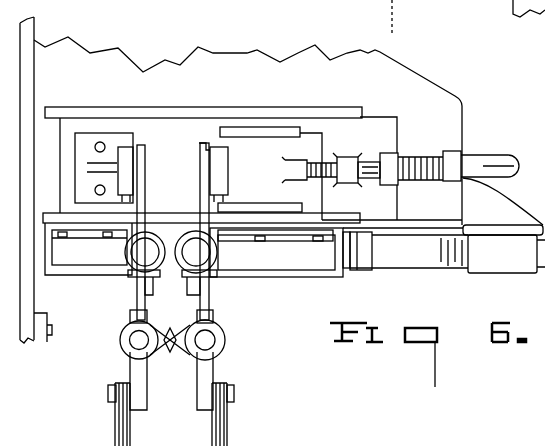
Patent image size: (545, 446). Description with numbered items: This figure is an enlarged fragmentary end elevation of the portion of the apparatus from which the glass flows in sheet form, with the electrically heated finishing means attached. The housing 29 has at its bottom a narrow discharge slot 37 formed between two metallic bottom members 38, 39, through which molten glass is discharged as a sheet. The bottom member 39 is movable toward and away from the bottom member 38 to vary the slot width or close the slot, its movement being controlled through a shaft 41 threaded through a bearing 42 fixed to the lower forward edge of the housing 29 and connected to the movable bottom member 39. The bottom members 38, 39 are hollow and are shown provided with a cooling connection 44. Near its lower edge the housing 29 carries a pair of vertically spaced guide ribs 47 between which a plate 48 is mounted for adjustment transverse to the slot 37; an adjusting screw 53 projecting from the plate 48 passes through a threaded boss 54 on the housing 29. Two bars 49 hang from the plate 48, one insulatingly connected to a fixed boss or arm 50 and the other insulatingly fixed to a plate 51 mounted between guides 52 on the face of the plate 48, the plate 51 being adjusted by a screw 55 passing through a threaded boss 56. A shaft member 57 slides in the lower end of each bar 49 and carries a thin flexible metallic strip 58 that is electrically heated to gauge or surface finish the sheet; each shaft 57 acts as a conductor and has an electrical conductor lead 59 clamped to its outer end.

The housing 29 is at (418, 93).
The discharge slot 37 is at (170, 267).
The bottom member 38 is at (90, 270).
The bottom member 39 is at (291, 272).
The shaft 41 is at (424, 260).
The bearing 42 is at (512, 263).
The cooling connection 44 is at (192, 260).
The guide rib 47 is at (190, 108).
The plate 48 is at (369, 127).
The bar 49 is at (203, 178).
The boss or arm 50 is at (128, 146).
The plate 51 is at (283, 176).
The guide 52 is at (269, 131).
The adjusting screw 53 is at (483, 161).
The threaded boss 54 is at (448, 150).
The screw 55 is at (370, 179).
The threaded boss 56 is at (347, 184).
The shaft member 57 is at (128, 340).
The flexible metallic strip 58 is at (170, 327).
The electrical conductor lead 59 is at (123, 397).